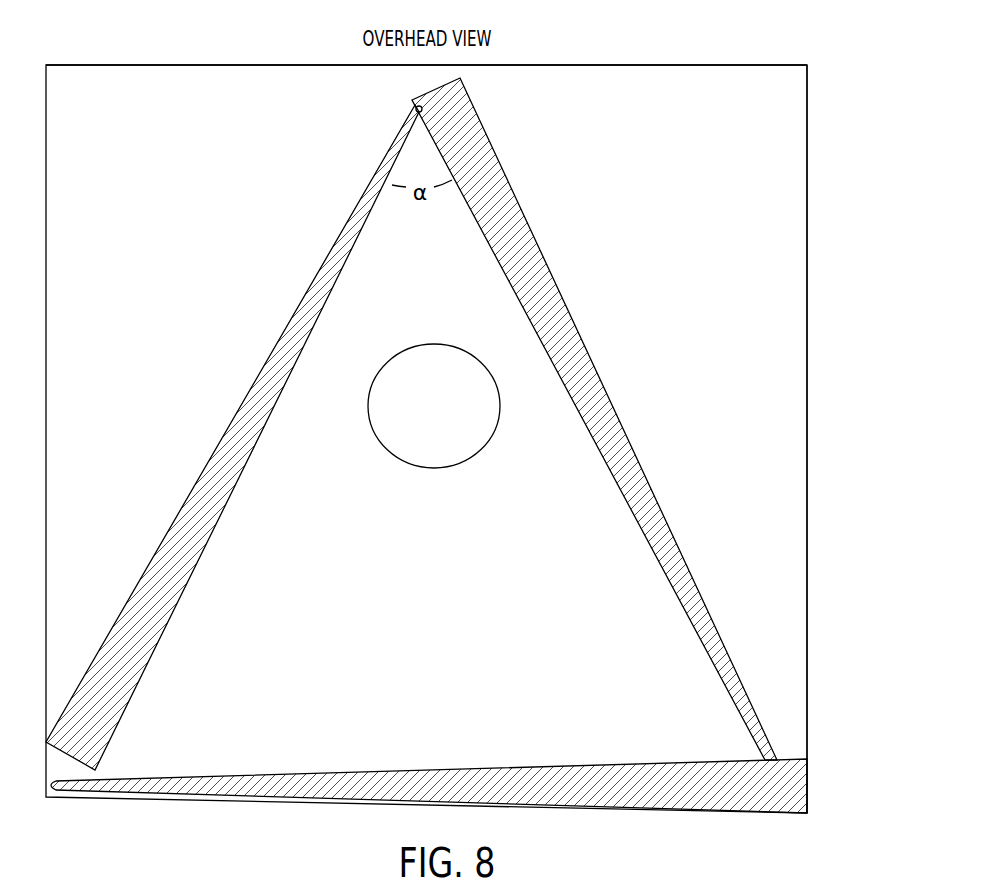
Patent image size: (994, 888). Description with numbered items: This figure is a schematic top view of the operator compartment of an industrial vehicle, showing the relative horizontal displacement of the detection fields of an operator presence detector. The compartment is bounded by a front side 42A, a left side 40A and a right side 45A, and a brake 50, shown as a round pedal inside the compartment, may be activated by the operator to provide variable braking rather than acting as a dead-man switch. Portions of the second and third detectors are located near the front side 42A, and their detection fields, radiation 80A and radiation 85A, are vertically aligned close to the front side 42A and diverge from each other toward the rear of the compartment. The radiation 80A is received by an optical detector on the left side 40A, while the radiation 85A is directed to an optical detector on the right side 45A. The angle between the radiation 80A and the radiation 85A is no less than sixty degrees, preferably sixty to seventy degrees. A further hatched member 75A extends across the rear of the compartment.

The left side 40A is at (47, 298).
The front side 42A is at (245, 65).
The right side 45A is at (806, 270).
The brake 50 is at (428, 367).
The base member 75A is at (485, 770).
The radiation 80A is at (213, 467).
The radiation 85A is at (515, 228).